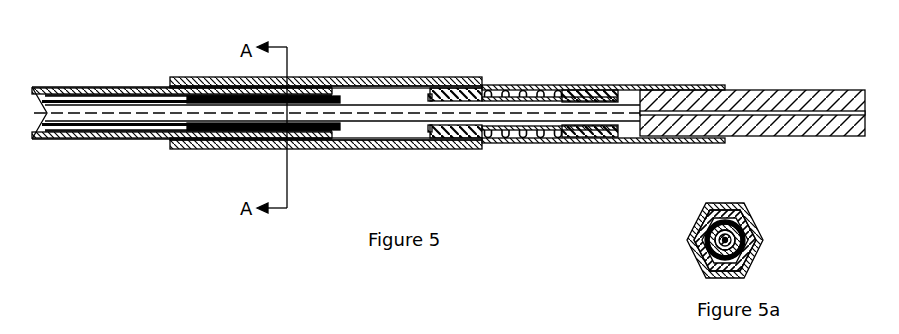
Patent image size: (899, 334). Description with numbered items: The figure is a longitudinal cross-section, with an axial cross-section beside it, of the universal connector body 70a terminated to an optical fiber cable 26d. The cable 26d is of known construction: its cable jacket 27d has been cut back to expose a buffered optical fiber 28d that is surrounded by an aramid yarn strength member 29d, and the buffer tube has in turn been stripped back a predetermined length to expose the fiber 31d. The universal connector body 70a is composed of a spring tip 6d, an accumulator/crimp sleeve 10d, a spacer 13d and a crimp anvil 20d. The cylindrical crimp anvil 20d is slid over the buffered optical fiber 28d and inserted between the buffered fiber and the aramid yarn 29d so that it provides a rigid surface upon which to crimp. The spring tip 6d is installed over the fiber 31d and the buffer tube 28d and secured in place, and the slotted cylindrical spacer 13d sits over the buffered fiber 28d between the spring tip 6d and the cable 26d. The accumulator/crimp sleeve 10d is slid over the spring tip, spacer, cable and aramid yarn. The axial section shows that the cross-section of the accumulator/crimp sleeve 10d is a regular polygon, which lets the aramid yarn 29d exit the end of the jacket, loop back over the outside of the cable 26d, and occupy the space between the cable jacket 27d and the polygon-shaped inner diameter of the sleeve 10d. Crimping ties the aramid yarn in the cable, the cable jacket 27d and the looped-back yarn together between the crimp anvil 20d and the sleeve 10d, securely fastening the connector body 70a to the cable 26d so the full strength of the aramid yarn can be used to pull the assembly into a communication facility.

In FIG. 5, the spring tip 6d is at (612, 144).
In FIG. 5, the accumulator/crimp sleeve 10d is at (415, 149).
In FIG. 5A, the accumulator/crimp sleeve 10d is at (700, 230).
In FIG. 5, the spacer 13d is at (365, 149).
In FIG. 5, the crimp anvil 20d is at (265, 122).
In FIG. 5A, the crimp anvil 20d is at (700, 258).
In FIG. 5, the optical fiber cable 26d is at (80, 82).
In FIG. 5, the cable jacket 27d is at (55, 136).
In FIG. 5A, the cable jacket 27d is at (745, 213).
In FIG. 5, the buffered optical fiber 28d is at (152, 104).
In FIG. 5A, the buffered optical fiber 28d is at (760, 222).
In FIG. 5, the aramid yarn strength member 29d is at (58, 98).
In FIG. 5A, the aramid yarn strength member 29d is at (748, 268).
In FIG. 5, the fiber 31d is at (686, 90).
In FIG. 5, the universal connector body 70a is at (445, 57).